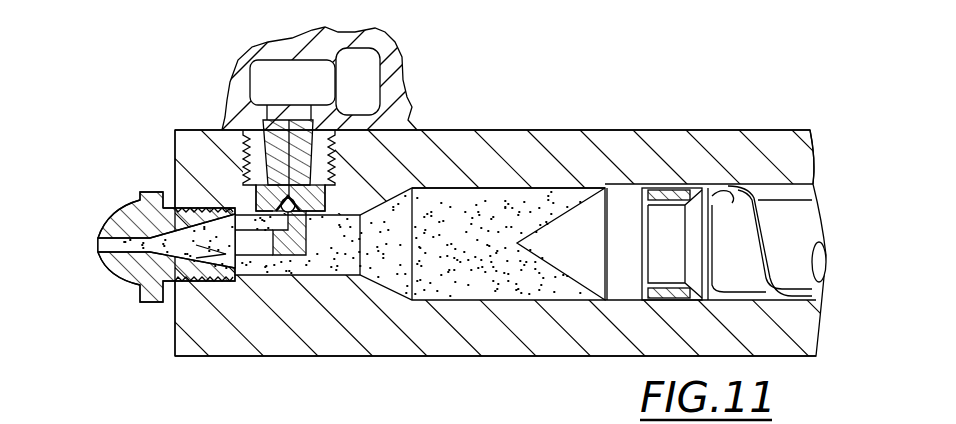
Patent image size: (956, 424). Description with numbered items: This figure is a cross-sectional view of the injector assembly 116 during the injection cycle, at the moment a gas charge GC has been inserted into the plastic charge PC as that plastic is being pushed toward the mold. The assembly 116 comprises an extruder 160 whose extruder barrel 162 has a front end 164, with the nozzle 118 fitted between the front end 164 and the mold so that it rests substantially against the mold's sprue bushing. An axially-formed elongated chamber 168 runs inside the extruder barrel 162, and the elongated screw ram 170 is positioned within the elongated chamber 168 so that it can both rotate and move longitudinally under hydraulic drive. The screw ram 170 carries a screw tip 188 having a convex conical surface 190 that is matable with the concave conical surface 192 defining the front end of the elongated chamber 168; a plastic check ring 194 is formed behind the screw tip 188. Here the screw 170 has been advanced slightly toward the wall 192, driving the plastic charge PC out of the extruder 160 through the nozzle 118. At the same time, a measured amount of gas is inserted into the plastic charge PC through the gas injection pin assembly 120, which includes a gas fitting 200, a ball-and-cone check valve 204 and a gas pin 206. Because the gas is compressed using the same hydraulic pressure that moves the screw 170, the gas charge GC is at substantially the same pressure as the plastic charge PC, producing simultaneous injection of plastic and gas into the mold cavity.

The injector assembly 116 is at (727, 118).
The nozzle 118 is at (143, 198).
The gas injection pin assembly 120 is at (377, 62).
The extruder 160 is at (380, 372).
The extruder barrel 162 is at (665, 130).
The front end 164 is at (443, 130).
The elongated chamber 168 is at (488, 196).
The elongated screw ram 170 is at (736, 268).
The screw tip 188 is at (568, 207).
The convex conical surface 190 is at (536, 232).
The concave conical surface 192 is at (412, 292).
The plastic check ring 194 is at (658, 292).
The gas fitting 200 is at (243, 136).
The check valve 204 is at (257, 195).
The gas pin 206 is at (223, 351).
The gas charge GC is at (152, 282).
The plastic charge PC is at (506, 292).